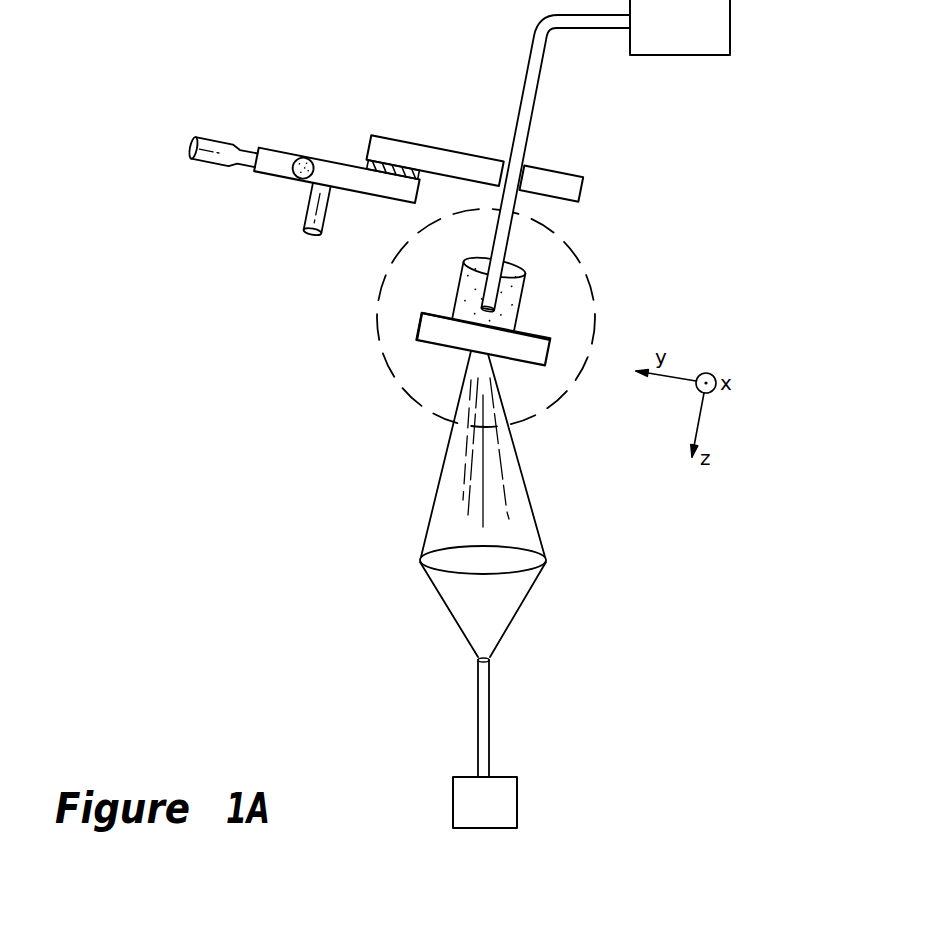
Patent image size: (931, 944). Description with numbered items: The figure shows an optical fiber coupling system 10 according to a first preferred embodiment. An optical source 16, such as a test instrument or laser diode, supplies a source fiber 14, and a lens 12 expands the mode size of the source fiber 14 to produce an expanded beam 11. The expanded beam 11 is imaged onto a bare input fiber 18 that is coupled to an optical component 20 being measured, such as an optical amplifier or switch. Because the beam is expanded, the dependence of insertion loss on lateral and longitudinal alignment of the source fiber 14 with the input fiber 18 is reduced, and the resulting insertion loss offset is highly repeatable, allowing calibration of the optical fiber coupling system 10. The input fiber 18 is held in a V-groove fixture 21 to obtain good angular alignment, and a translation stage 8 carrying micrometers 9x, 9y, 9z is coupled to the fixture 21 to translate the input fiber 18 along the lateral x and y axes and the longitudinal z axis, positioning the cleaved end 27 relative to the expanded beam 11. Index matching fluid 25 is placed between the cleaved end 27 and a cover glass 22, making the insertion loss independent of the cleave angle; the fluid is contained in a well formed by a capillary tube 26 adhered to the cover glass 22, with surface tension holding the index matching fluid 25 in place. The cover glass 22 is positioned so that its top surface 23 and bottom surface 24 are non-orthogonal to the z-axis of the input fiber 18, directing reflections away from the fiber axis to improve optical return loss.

The translation stage 8 is at (376, 186).
The micrometer 9x is at (303, 158).
The micrometer 9y is at (230, 138).
The micrometer 9z is at (311, 213).
The optical fiber coupling system 10 is at (245, 503).
The expanded beam 11 is at (513, 485).
The lens 12 is at (500, 560).
The source fiber 14 is at (485, 717).
The optical source 16 is at (497, 820).
The bare input fiber 18 is at (528, 91).
The optical component 20 is at (693, 36).
The V-groove fixture 21 is at (407, 150).
The cover glass 22 is at (450, 332).
The top surface 23 is at (430, 313).
The bottom surface 24 is at (423, 347).
The index matching fluid 25 is at (507, 265).
The capillary tube 26 is at (523, 302).
The cleaved end 27 is at (493, 315).